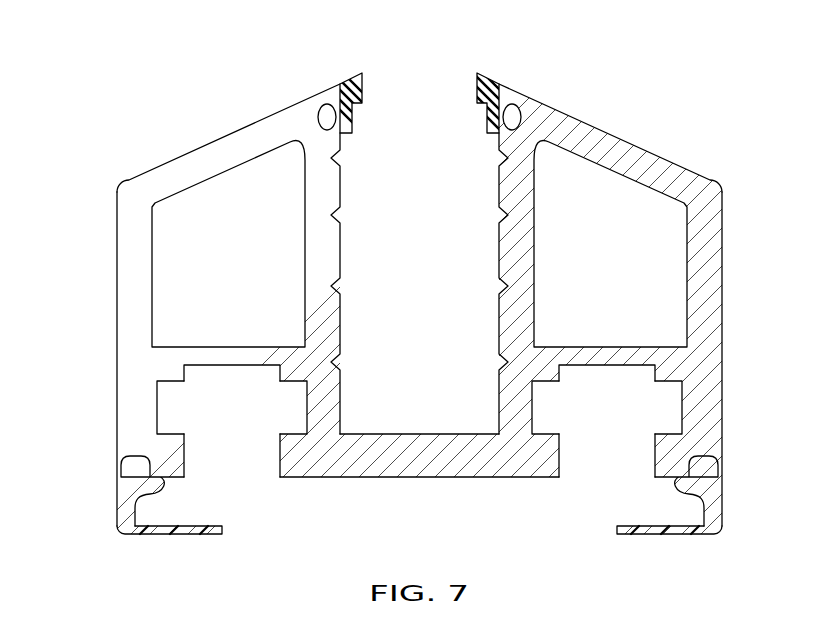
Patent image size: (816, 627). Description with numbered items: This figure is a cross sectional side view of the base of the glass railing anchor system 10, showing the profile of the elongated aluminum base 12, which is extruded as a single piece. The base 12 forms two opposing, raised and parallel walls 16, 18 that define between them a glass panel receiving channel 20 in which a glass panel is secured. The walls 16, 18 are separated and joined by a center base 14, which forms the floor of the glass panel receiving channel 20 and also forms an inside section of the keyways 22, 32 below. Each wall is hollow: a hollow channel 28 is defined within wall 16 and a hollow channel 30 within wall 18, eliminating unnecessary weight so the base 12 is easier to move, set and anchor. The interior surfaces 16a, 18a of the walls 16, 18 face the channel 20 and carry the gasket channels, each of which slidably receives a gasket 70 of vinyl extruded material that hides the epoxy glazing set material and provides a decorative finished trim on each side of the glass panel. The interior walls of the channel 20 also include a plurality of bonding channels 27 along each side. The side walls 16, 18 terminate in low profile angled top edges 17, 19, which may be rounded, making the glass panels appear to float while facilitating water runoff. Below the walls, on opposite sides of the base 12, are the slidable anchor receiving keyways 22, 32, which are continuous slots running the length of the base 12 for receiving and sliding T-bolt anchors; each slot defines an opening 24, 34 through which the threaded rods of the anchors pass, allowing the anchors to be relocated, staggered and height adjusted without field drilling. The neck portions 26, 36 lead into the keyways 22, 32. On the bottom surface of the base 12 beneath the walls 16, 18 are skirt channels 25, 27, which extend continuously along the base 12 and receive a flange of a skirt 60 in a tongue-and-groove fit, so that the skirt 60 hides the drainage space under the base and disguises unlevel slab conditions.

The glass railing anchor system 10 is at (408, 313).
The elongated aluminum base 12 is at (408, 313).
The center base 14 is at (430, 478).
The wall 16 is at (117, 235).
The interior surface 16a is at (341, 252).
The angled top edge 17 is at (243, 127).
The wall 18 is at (722, 235).
The interior surface 18a is at (498, 252).
The angled top edge 19 is at (612, 135).
The glass panel receiving channel 20 is at (399, 325).
The anchor receiving keyway 22 is at (160, 403).
The opening 24 is at (239, 462).
The skirt channel 25 is at (128, 462).
The first slot neck 26 is at (228, 368).
The skirt channel 27 is at (344, 157).
The hollow channel 28 is at (217, 271).
The hollow channel 30 is at (599, 271).
The anchor receiving keyway 32 is at (679, 403).
The opening 34 is at (607, 462).
The second slot neck 36 is at (600, 368).
The skirt 60 is at (172, 535).
The gasket 70 is at (350, 80).